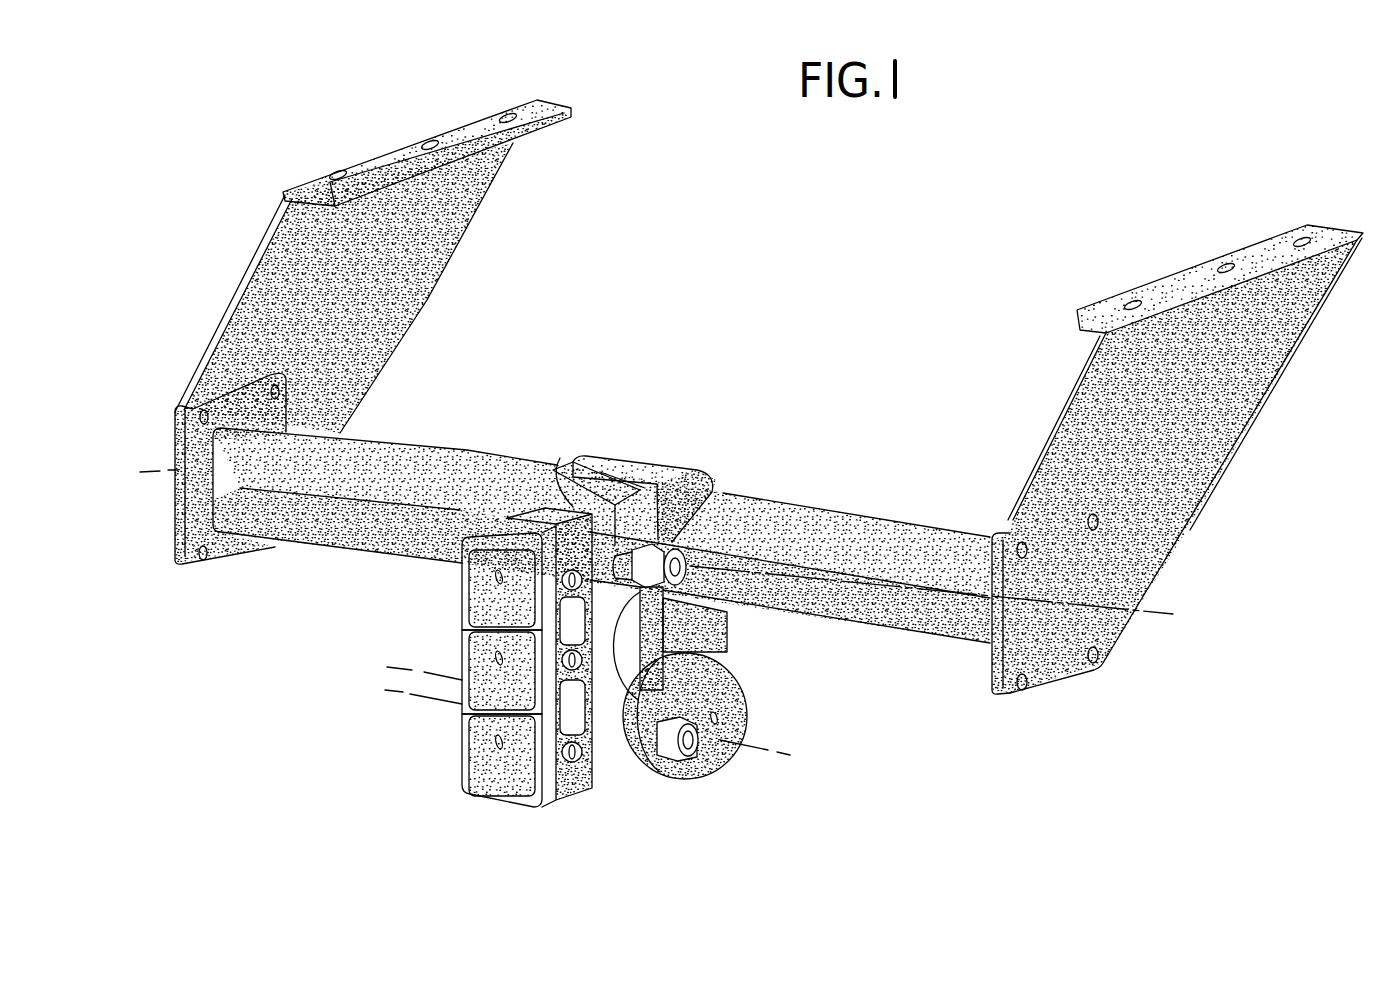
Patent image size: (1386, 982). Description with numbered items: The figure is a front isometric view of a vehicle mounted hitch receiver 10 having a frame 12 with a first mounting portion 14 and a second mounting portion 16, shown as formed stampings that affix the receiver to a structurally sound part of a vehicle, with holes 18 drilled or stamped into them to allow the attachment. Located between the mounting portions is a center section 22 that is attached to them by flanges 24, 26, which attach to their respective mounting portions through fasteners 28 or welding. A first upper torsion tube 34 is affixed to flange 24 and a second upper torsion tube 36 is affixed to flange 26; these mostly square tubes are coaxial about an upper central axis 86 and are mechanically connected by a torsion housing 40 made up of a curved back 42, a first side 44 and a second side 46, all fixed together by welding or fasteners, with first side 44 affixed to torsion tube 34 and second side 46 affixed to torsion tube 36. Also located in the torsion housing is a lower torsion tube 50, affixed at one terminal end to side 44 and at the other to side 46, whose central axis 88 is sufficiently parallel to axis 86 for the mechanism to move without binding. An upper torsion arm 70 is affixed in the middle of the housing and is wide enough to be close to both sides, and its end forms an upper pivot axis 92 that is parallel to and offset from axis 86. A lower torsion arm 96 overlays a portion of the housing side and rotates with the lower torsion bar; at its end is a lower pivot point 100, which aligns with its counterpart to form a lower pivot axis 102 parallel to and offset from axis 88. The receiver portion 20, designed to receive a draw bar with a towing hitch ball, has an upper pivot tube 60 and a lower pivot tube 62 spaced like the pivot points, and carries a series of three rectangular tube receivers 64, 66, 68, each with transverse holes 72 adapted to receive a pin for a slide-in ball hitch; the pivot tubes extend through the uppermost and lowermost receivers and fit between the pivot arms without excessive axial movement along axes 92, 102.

The hitch receiver 10 is at (903, 222).
The frame 12 is at (908, 774).
The first mounting portion 14 is at (440, 232).
The second mounting portion 16 is at (1115, 388).
The holes 18 is at (509, 112).
The receiver portion 20 is at (428, 737).
The center section 22 is at (875, 488).
The flange 24 is at (225, 556).
The flange 26 is at (988, 663).
The fasteners 28 is at (1105, 665).
The first upper torsion tube 34 is at (450, 452).
The second upper torsion tube 36 is at (876, 618).
The torsion housing 40 is at (667, 445).
The curved back 42 is at (600, 452).
The first side 44 is at (567, 470).
The second side 46 is at (742, 668).
The lower torsion tube 50 is at (720, 640).
The upper pivot tube 60 is at (705, 522).
The lower pivot tube 62 is at (612, 787).
The receiver 64 is at (470, 598).
The receiver 66 is at (470, 652).
The receiver 68 is at (497, 790).
The upper torsion arm 70 is at (614, 495).
The transverse holes 72 is at (350, 560).
The central axis 86 is at (1113, 627).
The central axis 88 is at (722, 719).
The upper pivot axis 92 is at (760, 614).
The lower torsion arm 96 is at (720, 765).
The lower pivot point 100 is at (690, 776).
The lower pivot axis 102 is at (755, 752).